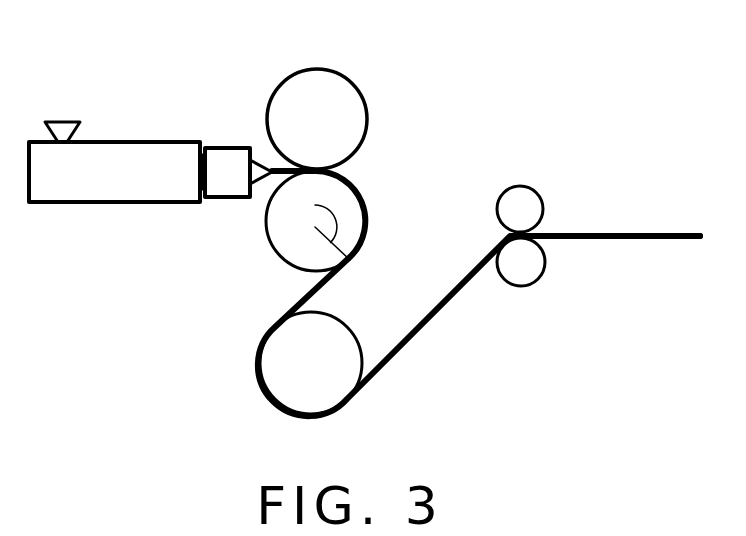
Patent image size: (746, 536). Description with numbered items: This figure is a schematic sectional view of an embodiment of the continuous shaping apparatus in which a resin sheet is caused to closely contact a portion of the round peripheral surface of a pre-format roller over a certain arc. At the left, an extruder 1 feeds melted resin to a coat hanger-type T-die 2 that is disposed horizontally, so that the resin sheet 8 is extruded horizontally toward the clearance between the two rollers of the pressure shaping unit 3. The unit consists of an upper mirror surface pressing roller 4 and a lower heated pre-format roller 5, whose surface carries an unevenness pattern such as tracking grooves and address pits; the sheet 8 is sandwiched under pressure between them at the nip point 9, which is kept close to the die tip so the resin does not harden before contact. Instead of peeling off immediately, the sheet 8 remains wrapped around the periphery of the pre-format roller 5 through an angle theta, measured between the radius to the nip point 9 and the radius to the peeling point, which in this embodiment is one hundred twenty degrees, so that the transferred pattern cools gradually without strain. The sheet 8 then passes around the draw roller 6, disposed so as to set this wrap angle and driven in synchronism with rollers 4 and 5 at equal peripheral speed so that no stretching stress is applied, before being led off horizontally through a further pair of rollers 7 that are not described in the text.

The extruder 1 is at (108, 188).
The T-die 2 is at (230, 188).
The pressure shaping unit 3 is at (363, 170).
The pressing roller 4 is at (350, 129).
The pre-format roller 5 is at (339, 215).
The draw roller 6 is at (330, 387).
The nip rollers 7 is at (528, 258).
The resin sheet 8 is at (657, 242).
The nip point 9 is at (315, 227).